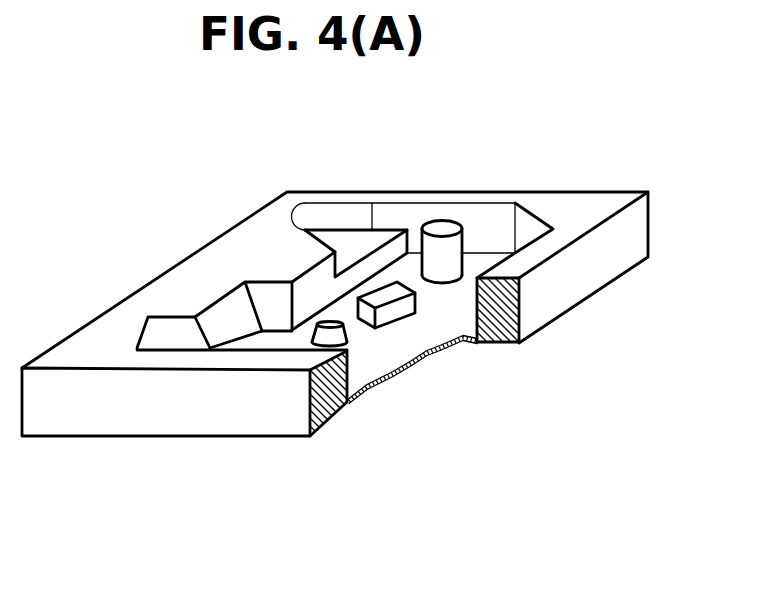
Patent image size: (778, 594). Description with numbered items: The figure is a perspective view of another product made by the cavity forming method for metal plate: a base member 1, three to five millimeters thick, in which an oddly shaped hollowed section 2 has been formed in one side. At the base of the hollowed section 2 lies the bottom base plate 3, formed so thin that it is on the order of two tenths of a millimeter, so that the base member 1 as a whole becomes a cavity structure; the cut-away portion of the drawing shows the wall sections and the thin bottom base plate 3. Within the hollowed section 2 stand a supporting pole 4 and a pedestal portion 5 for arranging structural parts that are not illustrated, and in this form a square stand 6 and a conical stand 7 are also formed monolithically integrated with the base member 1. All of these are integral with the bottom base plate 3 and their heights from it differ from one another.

The base member 1 is at (656, 219).
The hollowed section 2 is at (450, 308).
The bottom base plate 3 is at (400, 380).
The supporting pole 4 is at (443, 220).
The pedestal portion 5 is at (343, 236).
The square stand 6 is at (396, 304).
The conical stand 7 is at (318, 318).